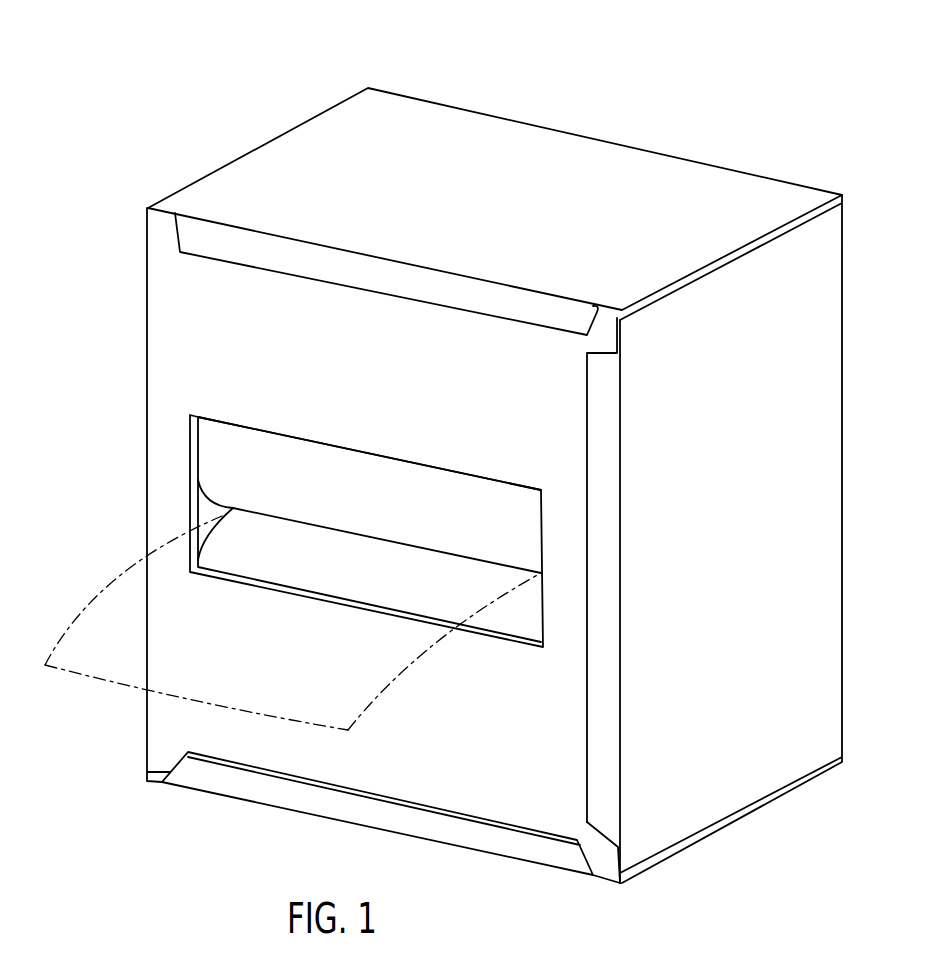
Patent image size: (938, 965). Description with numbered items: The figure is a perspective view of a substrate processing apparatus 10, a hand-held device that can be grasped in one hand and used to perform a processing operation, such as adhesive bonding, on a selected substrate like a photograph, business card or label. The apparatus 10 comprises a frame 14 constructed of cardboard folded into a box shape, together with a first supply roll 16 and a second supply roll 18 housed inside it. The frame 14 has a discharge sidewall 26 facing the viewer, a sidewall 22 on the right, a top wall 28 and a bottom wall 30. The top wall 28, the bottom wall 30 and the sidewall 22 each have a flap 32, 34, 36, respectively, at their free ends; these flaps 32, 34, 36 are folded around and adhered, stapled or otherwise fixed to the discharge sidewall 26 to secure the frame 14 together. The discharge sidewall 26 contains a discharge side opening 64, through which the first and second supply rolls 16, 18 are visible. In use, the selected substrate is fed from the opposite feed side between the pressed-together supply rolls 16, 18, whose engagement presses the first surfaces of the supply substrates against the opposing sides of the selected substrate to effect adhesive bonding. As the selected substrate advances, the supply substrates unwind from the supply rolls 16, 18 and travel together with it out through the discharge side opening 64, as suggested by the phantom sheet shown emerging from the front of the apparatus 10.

The substrate processing apparatus 10 is at (216, 96).
The frame 14 is at (545, 106).
The first supply roll 16 is at (520, 617).
The second supply roll 18 is at (362, 473).
The sidewall 22 is at (716, 446).
The discharge sidewall 26 is at (270, 338).
The top wall 28 is at (473, 208).
The bottom wall 30 is at (607, 882).
The flap 32 is at (497, 306).
The flap 34 is at (382, 812).
The flap 36 is at (596, 410).
The discharge side opening 64 is at (257, 457).